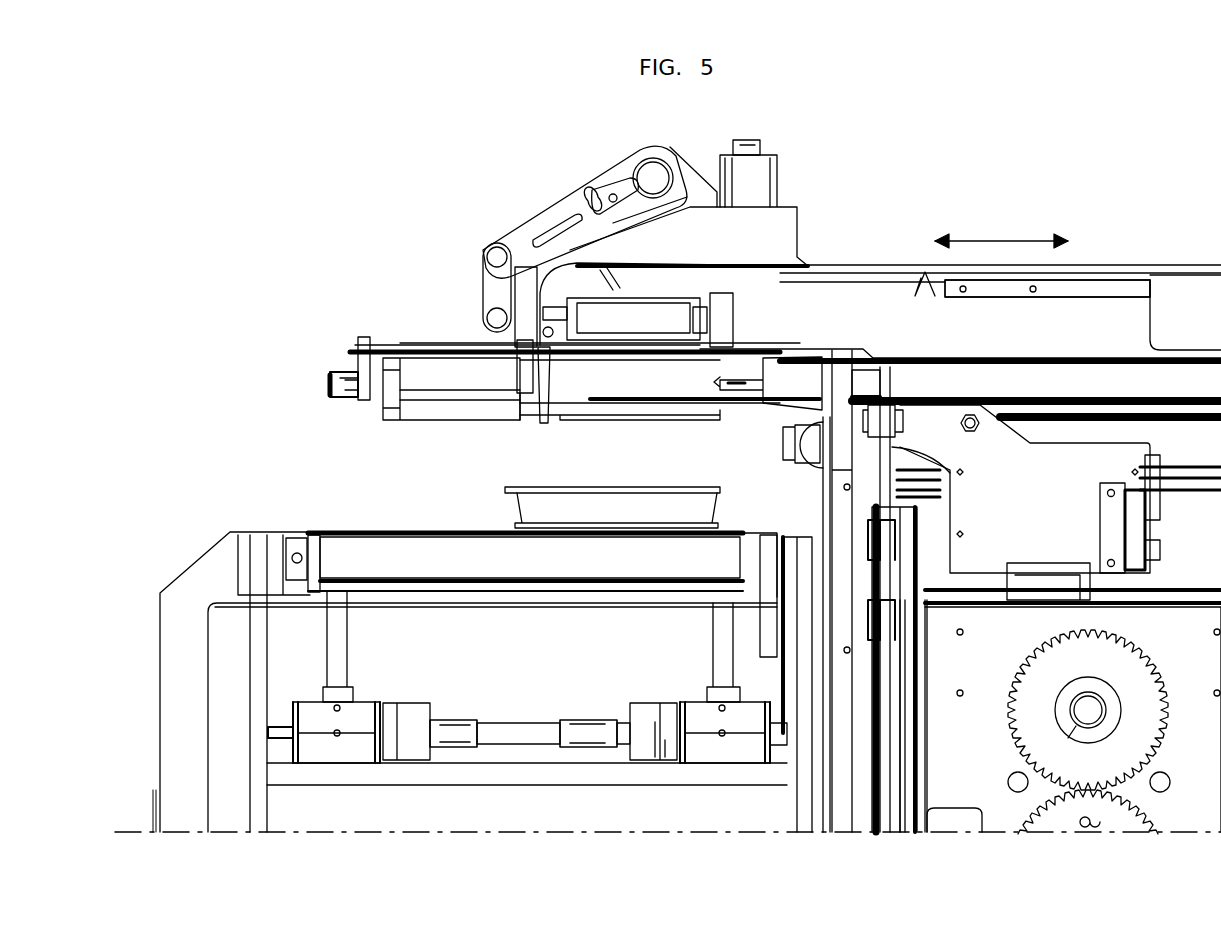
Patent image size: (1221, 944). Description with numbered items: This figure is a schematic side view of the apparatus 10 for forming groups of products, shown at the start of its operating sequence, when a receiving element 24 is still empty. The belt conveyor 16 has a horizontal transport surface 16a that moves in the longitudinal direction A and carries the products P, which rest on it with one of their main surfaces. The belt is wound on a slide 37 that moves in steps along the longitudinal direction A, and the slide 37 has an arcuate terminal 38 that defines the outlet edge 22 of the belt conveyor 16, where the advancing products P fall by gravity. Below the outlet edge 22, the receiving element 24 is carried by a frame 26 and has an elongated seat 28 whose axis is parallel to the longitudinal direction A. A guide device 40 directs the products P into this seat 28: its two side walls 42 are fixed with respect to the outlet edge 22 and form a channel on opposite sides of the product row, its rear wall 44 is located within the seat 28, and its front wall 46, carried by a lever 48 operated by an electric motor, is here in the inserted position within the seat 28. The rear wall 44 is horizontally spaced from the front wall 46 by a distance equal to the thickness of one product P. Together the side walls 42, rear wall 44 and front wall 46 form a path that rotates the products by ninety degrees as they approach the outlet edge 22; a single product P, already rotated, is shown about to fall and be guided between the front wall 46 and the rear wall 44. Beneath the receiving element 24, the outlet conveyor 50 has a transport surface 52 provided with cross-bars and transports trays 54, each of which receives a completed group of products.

The apparatus for forming groups of products 10 is at (300, 172).
The belt conveyor 16 is at (888, 222).
The transport surface 16a is at (1103, 265).
The longitudinal direction A is at (987, 238).
The outlet edge 22 is at (540, 324).
The receiving element 24 is at (402, 428).
The frame 26 is at (355, 345).
The seat 28 is at (637, 382).
The slide 37 is at (778, 310).
The arcuate terminal 38 is at (568, 288).
The guide device 40 is at (580, 175).
The side walls 42 is at (637, 240).
The rear wall 44 is at (547, 380).
The front wall 46 is at (522, 368).
The lever 48 is at (520, 228).
The products P is at (525, 298).
The outlet conveyor 50 is at (325, 511).
The transport surface 52 is at (393, 520).
The tray 54 is at (497, 498).